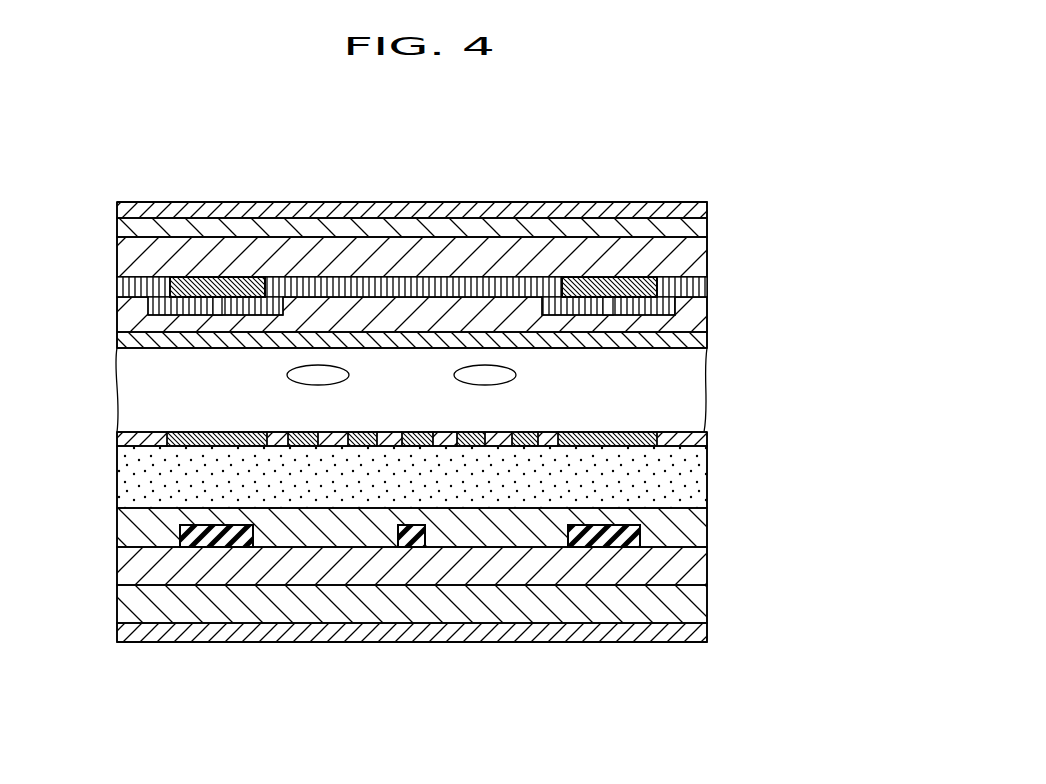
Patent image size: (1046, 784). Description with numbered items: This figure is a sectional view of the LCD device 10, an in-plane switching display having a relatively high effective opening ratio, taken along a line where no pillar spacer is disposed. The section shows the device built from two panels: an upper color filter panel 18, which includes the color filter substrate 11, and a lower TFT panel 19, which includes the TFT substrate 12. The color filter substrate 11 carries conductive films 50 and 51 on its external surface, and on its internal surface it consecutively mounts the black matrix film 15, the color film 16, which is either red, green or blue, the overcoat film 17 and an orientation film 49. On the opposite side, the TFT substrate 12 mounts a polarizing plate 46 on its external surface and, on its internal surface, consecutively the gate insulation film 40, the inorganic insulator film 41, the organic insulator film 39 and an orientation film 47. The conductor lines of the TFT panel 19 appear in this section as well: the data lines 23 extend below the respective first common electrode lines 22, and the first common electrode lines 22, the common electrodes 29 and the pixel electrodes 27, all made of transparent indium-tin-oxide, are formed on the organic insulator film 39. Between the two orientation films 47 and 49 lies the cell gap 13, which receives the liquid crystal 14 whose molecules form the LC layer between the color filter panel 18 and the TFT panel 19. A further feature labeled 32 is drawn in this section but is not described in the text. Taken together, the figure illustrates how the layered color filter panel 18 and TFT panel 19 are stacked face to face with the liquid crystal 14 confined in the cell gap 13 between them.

The LCD device 10 is at (672, 192).
The color filter substrate 11 is at (697, 256).
The TFT substrate 12 is at (703, 600).
The cell gap 13 is at (688, 378).
The LC molecules 14 is at (287, 377).
The black matrix film 15 is at (700, 284).
The color film 16 is at (690, 307).
The overcoat film 17 is at (700, 320).
The color filter panel 18 is at (810, 190).
The TFT panel 19 is at (810, 437).
The first common electrode lines 22 is at (207, 432).
The data lines 23 is at (180, 536).
The pixel electrodes 27 is at (527, 447).
The common electrodes 29 is at (462, 432).
The contact hole 32 is at (409, 547).
The organic insulator film 39 is at (705, 473).
The gate insulation film 40 is at (698, 568).
The inorganic insulator film 41 is at (698, 520).
The polarizing plate 46 is at (705, 632).
The orientation film 47 is at (705, 440).
The orientation film 49 is at (705, 343).
The conductive film 50 is at (706, 229).
The conductive film 51 is at (700, 213).